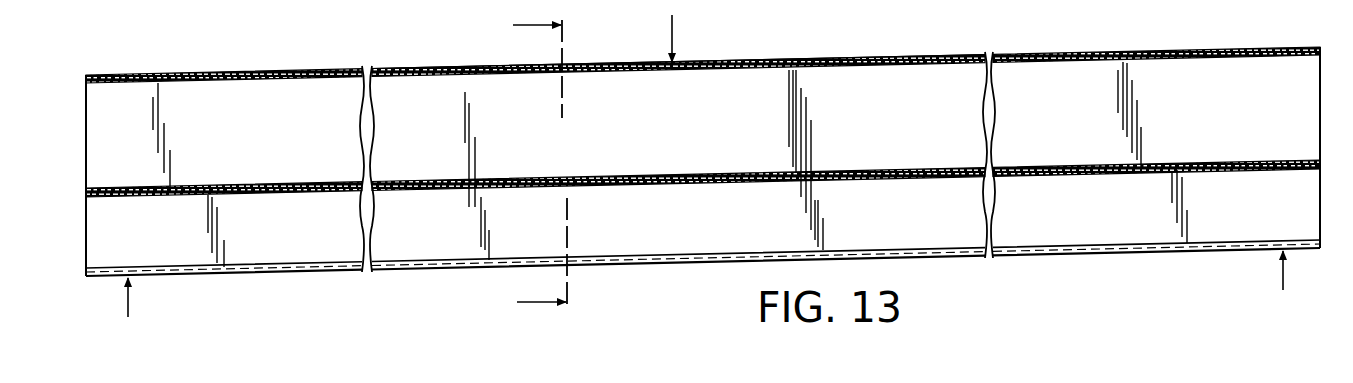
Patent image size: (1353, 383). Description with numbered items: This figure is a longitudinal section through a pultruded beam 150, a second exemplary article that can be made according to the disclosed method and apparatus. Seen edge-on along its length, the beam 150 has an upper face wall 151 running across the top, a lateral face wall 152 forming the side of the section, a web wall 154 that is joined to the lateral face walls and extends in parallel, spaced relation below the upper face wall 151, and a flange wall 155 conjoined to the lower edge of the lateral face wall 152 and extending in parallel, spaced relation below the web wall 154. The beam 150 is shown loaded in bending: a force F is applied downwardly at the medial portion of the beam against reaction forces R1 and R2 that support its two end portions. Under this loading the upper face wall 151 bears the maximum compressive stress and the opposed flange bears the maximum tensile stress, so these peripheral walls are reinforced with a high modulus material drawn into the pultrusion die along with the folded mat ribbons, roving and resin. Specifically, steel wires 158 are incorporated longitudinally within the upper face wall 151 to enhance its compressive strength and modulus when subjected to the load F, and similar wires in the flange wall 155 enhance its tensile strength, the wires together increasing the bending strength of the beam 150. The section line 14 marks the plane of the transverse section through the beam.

The beam 150 is at (703, 166).
The upper face wall 151 is at (820, 60).
The lateral face wall 152 is at (716, 131).
The web wall 154 is at (862, 173).
The flange wall 155 is at (682, 255).
The steel wires 158 is at (440, 69).
The section line 14- 14 is at (558, 163).
The force F is at (681, 34).
The reaction force R1 is at (129, 313).
The reaction force R2 is at (1286, 285).